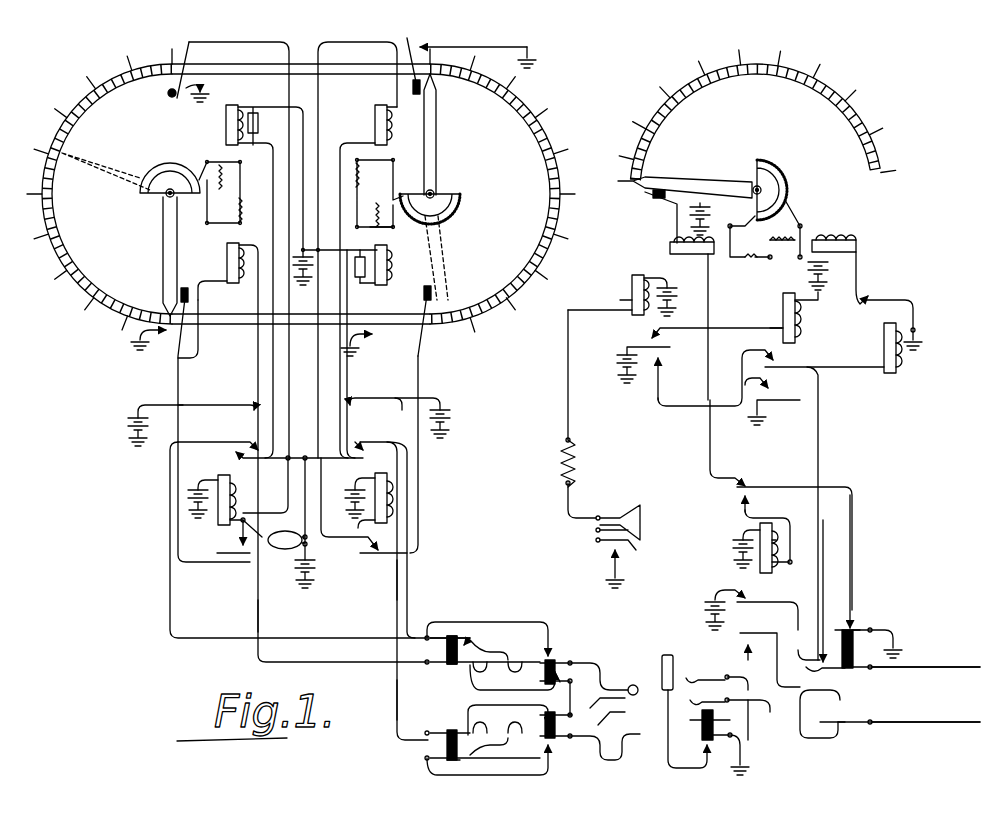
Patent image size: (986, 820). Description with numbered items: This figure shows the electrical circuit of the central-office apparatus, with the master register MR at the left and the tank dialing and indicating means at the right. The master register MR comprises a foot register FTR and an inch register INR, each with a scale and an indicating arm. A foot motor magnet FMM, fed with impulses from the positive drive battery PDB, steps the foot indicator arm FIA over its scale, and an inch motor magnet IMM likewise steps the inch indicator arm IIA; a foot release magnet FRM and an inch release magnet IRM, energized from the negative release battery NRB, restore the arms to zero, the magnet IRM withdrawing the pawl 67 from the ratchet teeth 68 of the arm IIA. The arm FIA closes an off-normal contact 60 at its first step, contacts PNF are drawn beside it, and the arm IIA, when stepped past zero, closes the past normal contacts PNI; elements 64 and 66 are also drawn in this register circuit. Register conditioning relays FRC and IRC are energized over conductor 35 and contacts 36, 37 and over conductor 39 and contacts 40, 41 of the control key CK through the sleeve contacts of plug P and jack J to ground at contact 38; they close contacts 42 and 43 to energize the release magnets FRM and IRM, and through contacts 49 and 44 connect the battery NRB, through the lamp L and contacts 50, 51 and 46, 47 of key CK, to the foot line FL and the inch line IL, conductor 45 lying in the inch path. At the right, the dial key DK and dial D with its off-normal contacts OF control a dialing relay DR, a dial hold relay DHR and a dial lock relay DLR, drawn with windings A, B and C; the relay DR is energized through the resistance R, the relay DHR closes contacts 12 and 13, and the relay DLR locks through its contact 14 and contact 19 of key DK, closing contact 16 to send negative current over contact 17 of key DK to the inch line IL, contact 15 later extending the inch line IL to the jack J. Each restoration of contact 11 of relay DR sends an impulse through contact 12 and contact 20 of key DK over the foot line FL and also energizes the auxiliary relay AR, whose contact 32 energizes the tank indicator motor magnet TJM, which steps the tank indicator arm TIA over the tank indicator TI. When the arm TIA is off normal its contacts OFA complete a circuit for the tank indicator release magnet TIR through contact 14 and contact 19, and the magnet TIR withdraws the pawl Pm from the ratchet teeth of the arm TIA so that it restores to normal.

The foot register FTR is at (88, 197).
The inch register INR is at (502, 190).
The foot indicator arm FIA is at (163, 260).
The inch indicator arm IIA is at (437, 130).
The pointer normal contact F PNF is at (228, 250).
The past normal contacts PNI is at (424, 341).
The master register MR is at (341, 234).
The foot motor magnet FMM is at (226, 127).
The inch release magnet IRM is at (375, 119).
The foot release magnet FRM is at (227, 255).
The inch motor magnet IMM is at (387, 271).
The positive drive battery PDB is at (312, 271).
The foot register conditioning relay FRC is at (232, 499).
The inch register conditioning relay IRC is at (375, 480).
The lamp L is at (290, 550).
The negative release battery NRB is at (315, 566).
The control key CK is at (490, 641).
The plug P is at (605, 711).
The pawl Pm is at (765, 229).
The jack J is at (695, 711).
The dial key DK is at (889, 694).
The foot line FL is at (940, 669).
The inch line IL is at (938, 725).
The tank indicator TI is at (763, 106).
The tank indicator arm TIA is at (688, 179).
The off-normal contacts OFA is at (660, 207).
The tank indicator release magnet TIR is at (670, 259).
The tank indicator motor magnet TJM is at (856, 243).
The dialing relay DR is at (638, 276).
The dial hold relay DHR is at (786, 294).
The auxiliary relay AR is at (890, 376).
The dial lock relay DLR is at (760, 533).
The winding A is at (618, 291).
The winding B is at (771, 316).
The winding C is at (779, 542).
The resistance R is at (584, 457).
The dial D is at (631, 527).
The off-normal contacts OF is at (604, 549).
The contact of dialing relay 11 is at (670, 351).
The alternate contact of dial hold relay 12 is at (790, 366).
The alternate contact of dial hold relay 13 is at (768, 411).
The contact of dial lock relay 14 is at (758, 485).
The normal contact of dial lock relay 15 is at (756, 631).
The alternate contact of dial lock relay 16 is at (764, 603).
The alternate contact of dial key 17 is at (846, 729).
The alternate contact of dial key 19 is at (855, 629).
The contact of dial key 20 is at (838, 669).
The alternate contact of auxiliary relay 32 is at (880, 303).
The conductor 35 is at (262, 628).
The normal contact of control key 36 is at (455, 669).
The normal contact of control key 37 is at (552, 685).
The alternate contact of jack 38 is at (700, 737).
The conductor 39 is at (397, 703).
The contact of control key 40 is at (455, 731).
The contact of control key 41 is at (565, 717).
The alternate contact of relay FRC 42 is at (218, 404).
The alternate contact of relay IRC 43 is at (372, 403).
The contact of relay IRC 44 is at (375, 442).
The conductor 45 is at (405, 601).
The contact of control key 46 is at (462, 759).
The contact of control key 47 is at (540, 736).
The contact of relay FRC 49 is at (224, 451).
The contact of control key 50 is at (470, 639).
The contact of control key 51 is at (545, 663).
The off-normal contact 60 is at (172, 356).
The winding 64 is at (388, 231).
The contact 66 is at (384, 561).
The pawl 67 is at (385, 166).
The ratchet teeth 68 is at (460, 208).